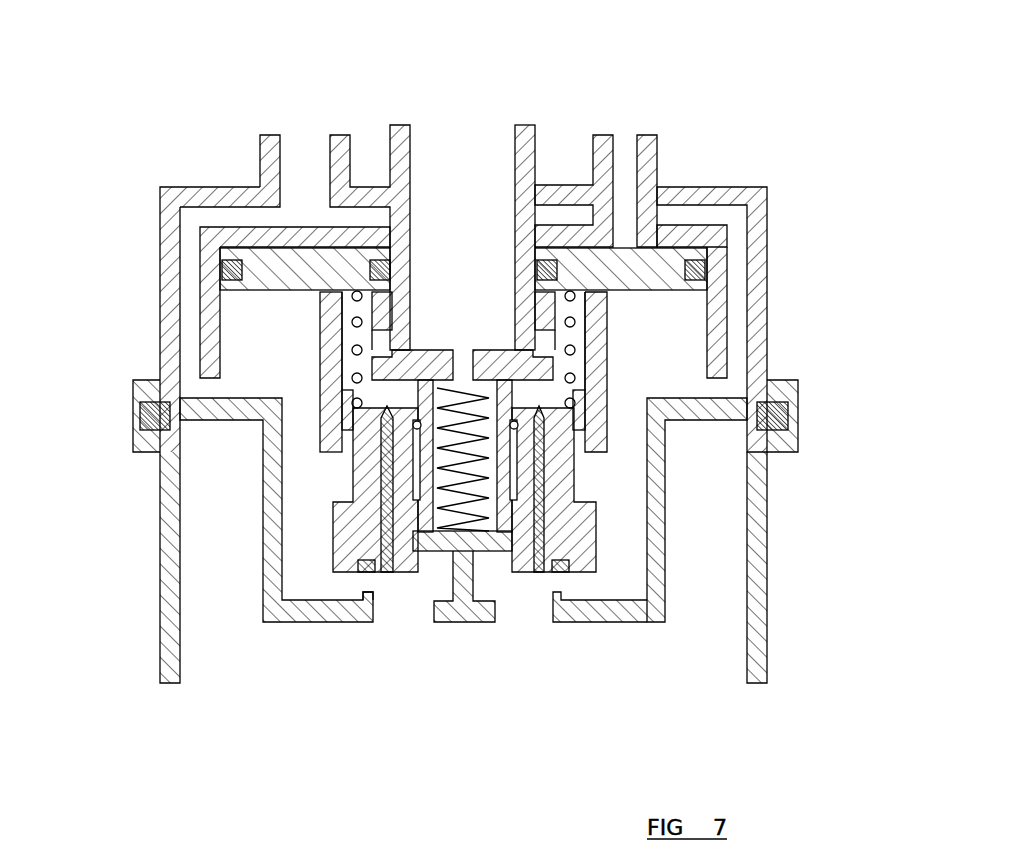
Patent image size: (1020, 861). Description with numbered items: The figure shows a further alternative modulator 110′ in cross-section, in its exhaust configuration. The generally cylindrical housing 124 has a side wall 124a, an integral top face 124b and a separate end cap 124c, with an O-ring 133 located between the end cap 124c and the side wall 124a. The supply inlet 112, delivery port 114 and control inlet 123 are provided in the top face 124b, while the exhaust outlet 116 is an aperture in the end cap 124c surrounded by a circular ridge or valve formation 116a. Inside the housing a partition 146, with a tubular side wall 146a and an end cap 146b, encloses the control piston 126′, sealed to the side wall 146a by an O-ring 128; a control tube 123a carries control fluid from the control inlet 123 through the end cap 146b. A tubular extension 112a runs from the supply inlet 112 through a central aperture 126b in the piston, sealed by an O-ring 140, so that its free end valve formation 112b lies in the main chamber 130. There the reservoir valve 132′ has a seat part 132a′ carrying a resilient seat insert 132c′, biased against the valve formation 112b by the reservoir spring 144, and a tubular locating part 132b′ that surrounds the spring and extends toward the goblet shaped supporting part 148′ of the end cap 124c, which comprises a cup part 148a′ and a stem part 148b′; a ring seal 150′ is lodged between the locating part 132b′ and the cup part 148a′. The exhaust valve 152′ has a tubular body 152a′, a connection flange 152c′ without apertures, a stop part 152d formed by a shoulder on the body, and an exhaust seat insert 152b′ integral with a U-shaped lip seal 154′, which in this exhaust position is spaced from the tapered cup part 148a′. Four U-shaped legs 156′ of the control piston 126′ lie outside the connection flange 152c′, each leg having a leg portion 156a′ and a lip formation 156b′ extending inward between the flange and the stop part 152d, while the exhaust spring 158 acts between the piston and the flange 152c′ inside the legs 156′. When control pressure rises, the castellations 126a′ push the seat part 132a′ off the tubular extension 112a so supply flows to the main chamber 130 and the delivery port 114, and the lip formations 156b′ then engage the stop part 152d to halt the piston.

The modulator 110′ is at (770, 245).
The supply inlet 112 is at (410, 163).
The tubular extension 112a is at (408, 308).
The valve formation 112b is at (415, 348).
The delivery port 114 is at (283, 175).
The exhaust outlet 116 is at (377, 607).
The valve formation 116a is at (362, 590).
The control inlet 123 is at (640, 168).
The control tube 123a is at (640, 252).
The housing 124 is at (158, 324).
The side wall 124a is at (170, 253).
The top face 124b is at (186, 187).
The end cap 124c is at (670, 600).
The control piston 126′ is at (660, 247).
The castellations 126a′ is at (607, 310).
The aperture 126b is at (545, 268).
The O-ring 128 is at (770, 205).
The main chamber 130 is at (258, 358).
The reservoir valve 132′ is at (607, 372).
The seat part 132a′ is at (607, 330).
The locating part 132b′ is at (607, 387).
The seat insert 132c′ is at (607, 322).
The O-ring 133 is at (791, 416).
The O-ring 140 is at (514, 260).
The reservoir spring 144 is at (605, 542).
The partition 146 is at (198, 282).
The side wall 146a is at (212, 312).
The end cap 146b is at (245, 226).
The supporting part 148′ is at (499, 558).
The cup part 148a′ is at (573, 505).
The stem part 148b′ is at (452, 588).
The seal 150′ is at (545, 522).
The exhaust valve 152′ is at (665, 528).
The tubular body 152a′ is at (365, 535).
The exhaust seat insert 152b′ is at (540, 576).
The connection flange 152c′ is at (582, 422).
The stop part 152d is at (353, 503).
The lip seal 154′ is at (380, 457).
The legs 156′ is at (343, 378).
The cage wall 156a′ is at (322, 297).
The lip formation 156b′ is at (340, 445).
The exhaust spring 158 is at (572, 366).